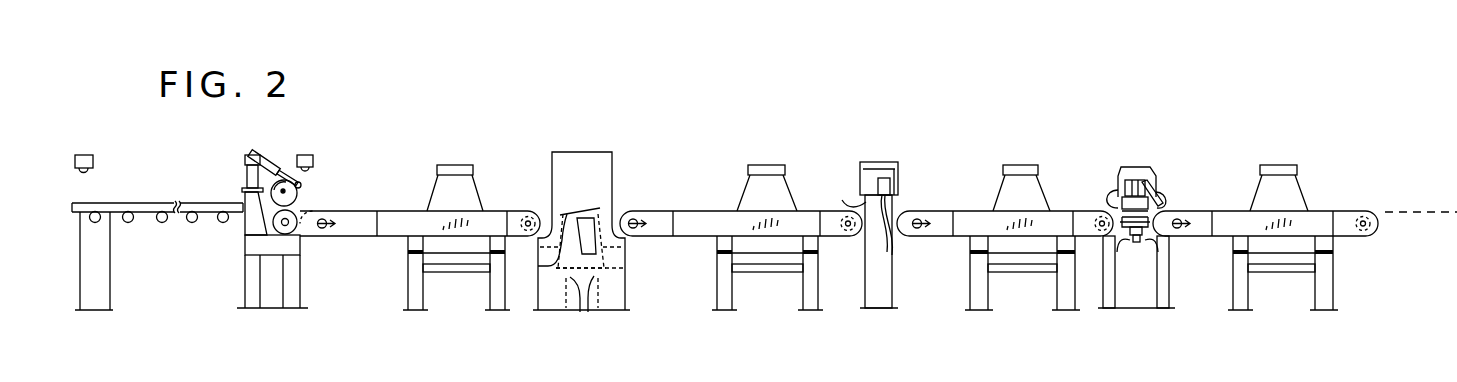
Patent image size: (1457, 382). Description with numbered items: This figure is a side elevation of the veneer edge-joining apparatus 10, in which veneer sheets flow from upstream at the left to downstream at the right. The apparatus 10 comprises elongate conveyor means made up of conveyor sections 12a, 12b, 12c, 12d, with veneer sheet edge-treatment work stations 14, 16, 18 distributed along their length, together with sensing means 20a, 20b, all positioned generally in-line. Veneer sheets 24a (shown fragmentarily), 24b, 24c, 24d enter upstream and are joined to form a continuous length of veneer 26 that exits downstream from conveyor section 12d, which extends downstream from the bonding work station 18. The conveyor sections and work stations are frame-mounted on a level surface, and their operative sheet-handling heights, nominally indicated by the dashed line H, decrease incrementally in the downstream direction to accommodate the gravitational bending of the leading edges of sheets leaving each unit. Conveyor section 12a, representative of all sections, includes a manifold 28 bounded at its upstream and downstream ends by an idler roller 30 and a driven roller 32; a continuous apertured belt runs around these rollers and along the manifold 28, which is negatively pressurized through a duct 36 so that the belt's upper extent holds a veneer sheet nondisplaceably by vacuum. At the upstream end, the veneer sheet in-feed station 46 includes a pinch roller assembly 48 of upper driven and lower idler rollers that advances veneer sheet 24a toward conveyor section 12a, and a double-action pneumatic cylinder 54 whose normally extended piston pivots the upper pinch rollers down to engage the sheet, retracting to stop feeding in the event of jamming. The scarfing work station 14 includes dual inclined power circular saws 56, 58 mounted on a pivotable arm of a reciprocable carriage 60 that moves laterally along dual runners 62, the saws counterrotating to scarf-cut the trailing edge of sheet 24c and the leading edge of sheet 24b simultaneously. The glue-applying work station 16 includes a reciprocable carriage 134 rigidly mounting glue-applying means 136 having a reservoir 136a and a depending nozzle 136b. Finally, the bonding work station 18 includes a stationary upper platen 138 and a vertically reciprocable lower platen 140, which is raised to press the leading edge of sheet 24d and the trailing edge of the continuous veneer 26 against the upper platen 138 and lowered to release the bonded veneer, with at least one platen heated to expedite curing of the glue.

The apparatus 10 is at (1124, 121).
The conveyor section 12a is at (486, 182).
The conveyor section 12b is at (798, 182).
The conveyor section 12c is at (1049, 184).
The conveyor section 12d is at (1309, 187).
The scarfing work station 14 is at (623, 176).
The glue-applying work station 16 is at (903, 157).
The bonding work station 18 is at (1156, 167).
The sensing means 20a is at (93, 151).
The sensing means 20b is at (316, 146).
The veneer sheet 24a is at (117, 202).
The veneer sheet 24b is at (405, 209).
The veneer sheet 24c is at (705, 209).
The veneer sheet 24d is at (972, 210).
The continuous length of veneer 26 is at (1388, 212).
The manifold 28 is at (370, 228).
The idler roller 30 is at (325, 228).
The driven roller 32 is at (523, 215).
The duct 36 is at (430, 208).
The veneer sheet in-feed station 46 is at (241, 184).
The pinch roller assembly 48 is at (303, 201).
The double-action pneumatic cylinder 54 is at (266, 153).
The power circular saw 56 is at (540, 247).
The power circular saw 58 is at (592, 208).
The reciprocable carriage 60 is at (626, 268).
The runners 62 is at (582, 311).
The reciprocable carriage 134 is at (897, 173).
The glue-applying means 136 is at (846, 193).
The reservoir 136a is at (884, 178).
The nozzle 136b is at (892, 255).
The upper platen 138 is at (1157, 197).
The lower platen 140 is at (1157, 245).
The dashed line H is at (1432, 209).